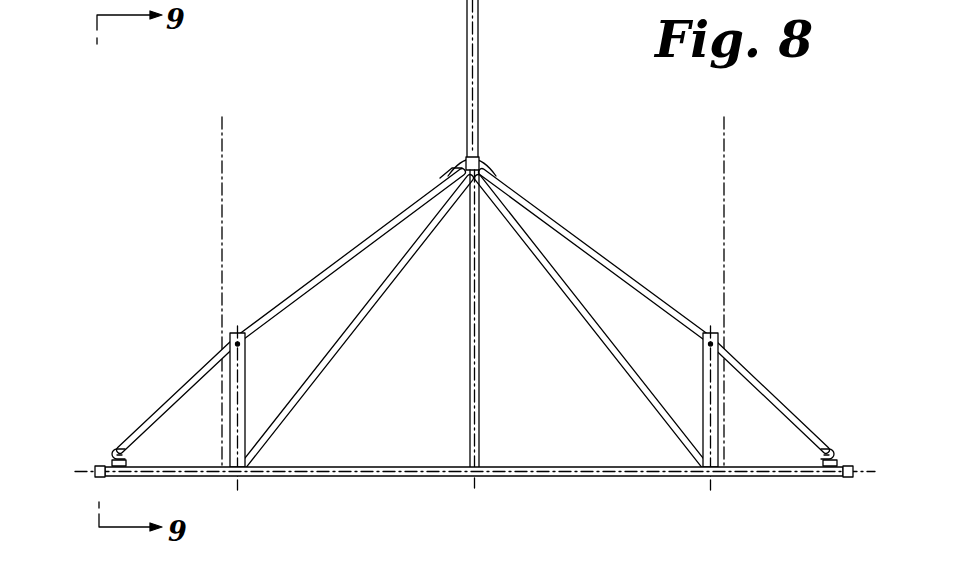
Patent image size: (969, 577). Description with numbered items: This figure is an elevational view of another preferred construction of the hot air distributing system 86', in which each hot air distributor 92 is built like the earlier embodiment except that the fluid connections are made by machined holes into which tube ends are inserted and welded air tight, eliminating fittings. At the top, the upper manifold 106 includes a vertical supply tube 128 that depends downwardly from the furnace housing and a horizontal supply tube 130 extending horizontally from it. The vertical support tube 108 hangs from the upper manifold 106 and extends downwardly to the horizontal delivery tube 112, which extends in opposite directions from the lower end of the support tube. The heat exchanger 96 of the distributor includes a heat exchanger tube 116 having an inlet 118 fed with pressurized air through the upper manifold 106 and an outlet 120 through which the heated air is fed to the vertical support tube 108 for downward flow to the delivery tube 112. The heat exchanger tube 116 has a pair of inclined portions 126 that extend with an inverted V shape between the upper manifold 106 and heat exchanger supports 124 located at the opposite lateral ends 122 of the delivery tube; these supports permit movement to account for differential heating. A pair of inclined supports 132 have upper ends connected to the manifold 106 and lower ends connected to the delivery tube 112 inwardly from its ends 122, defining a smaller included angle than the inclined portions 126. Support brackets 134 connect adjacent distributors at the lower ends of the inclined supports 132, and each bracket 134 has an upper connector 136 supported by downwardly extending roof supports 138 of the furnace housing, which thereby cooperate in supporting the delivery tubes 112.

The hot air distributing system 86' is at (473, 276).
The hot air distributor 92 is at (569, 492).
The heat exchanger 96 is at (584, 226).
The upper manifold 106 is at (498, 132).
The vertical support tube 108 is at (482, 362).
The horizontal delivery tube 112 is at (355, 480).
The heat exchanger tube 116 is at (368, 238).
The inlet 118 is at (498, 163).
The outlet 120 is at (450, 170).
The lateral ends 122 is at (93, 471).
The heat exchanger support 124 is at (113, 447).
The inclined portions 126 is at (280, 315).
The vertical supply tube 128 is at (480, 34).
The horizontal supply tube 130 is at (462, 152).
The inclined supports 132 is at (352, 316).
The support bracket 134 is at (243, 478).
The upper connector 136 is at (228, 345).
The roof supports 138 is at (220, 258).